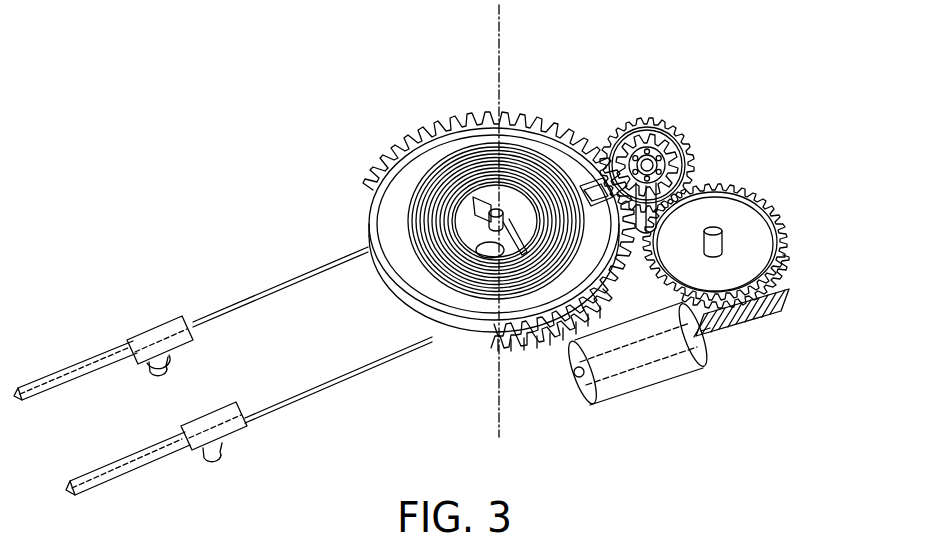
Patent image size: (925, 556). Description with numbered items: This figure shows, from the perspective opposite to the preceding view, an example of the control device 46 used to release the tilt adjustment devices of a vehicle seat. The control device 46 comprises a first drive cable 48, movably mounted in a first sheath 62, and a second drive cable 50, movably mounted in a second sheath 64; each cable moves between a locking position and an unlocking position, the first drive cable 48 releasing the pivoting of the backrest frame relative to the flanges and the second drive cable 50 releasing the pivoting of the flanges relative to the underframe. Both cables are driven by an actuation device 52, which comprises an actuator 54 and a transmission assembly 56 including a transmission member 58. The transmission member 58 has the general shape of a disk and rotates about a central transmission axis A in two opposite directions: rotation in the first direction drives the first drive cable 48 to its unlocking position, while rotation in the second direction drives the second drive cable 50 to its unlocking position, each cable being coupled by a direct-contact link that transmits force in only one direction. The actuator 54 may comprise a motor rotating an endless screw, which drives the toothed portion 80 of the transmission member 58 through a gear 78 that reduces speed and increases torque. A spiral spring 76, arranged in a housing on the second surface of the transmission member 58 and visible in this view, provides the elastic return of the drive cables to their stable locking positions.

The control device 46 is at (206, 84).
The first drive cable 48 is at (278, 405).
The second drive cable 50 is at (235, 300).
The actuation device 52 is at (796, 327).
The actuator 54 is at (637, 360).
The transmission assembly 56 is at (716, 122).
The transmission member 58 is at (393, 240).
The first sheath 62 is at (118, 468).
The second sheath 64 is at (48, 382).
The spring 76 is at (469, 297).
The gear 78 is at (582, 120).
The toothed portion 80 is at (447, 125).
The central transmission axis A is at (500, 30).